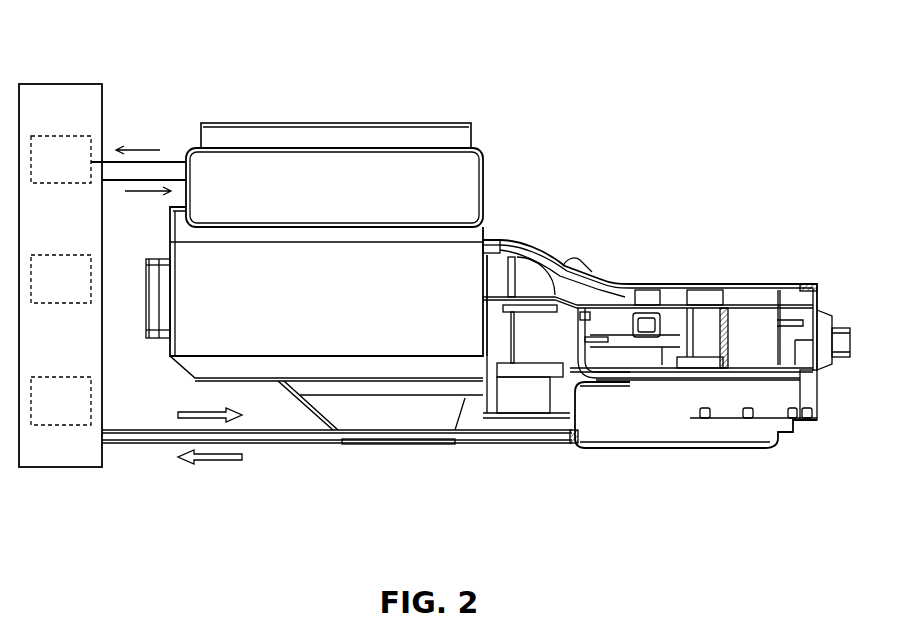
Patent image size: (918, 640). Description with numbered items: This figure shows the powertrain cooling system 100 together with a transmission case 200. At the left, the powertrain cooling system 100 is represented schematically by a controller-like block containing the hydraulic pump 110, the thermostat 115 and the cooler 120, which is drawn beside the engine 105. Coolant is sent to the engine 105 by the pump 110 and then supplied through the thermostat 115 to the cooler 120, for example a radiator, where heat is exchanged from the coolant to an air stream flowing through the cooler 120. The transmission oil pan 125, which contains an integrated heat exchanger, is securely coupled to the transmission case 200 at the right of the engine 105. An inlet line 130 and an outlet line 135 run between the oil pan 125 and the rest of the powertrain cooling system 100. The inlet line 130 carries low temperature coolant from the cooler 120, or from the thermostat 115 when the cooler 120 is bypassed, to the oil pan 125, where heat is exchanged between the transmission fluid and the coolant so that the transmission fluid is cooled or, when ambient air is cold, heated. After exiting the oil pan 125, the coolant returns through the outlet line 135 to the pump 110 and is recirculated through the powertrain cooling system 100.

The powertrain cooling system 100 is at (54, 83).
The engine 105 is at (340, 302).
The hydraulic pump 110 is at (46, 173).
The thermostat 115 is at (46, 292).
The cooler 120 is at (46, 413).
The transmission oil pan 125 is at (642, 437).
The inlet line 130 is at (157, 429).
The outlet line 135 is at (153, 444).
The transmission case 200 is at (740, 297).